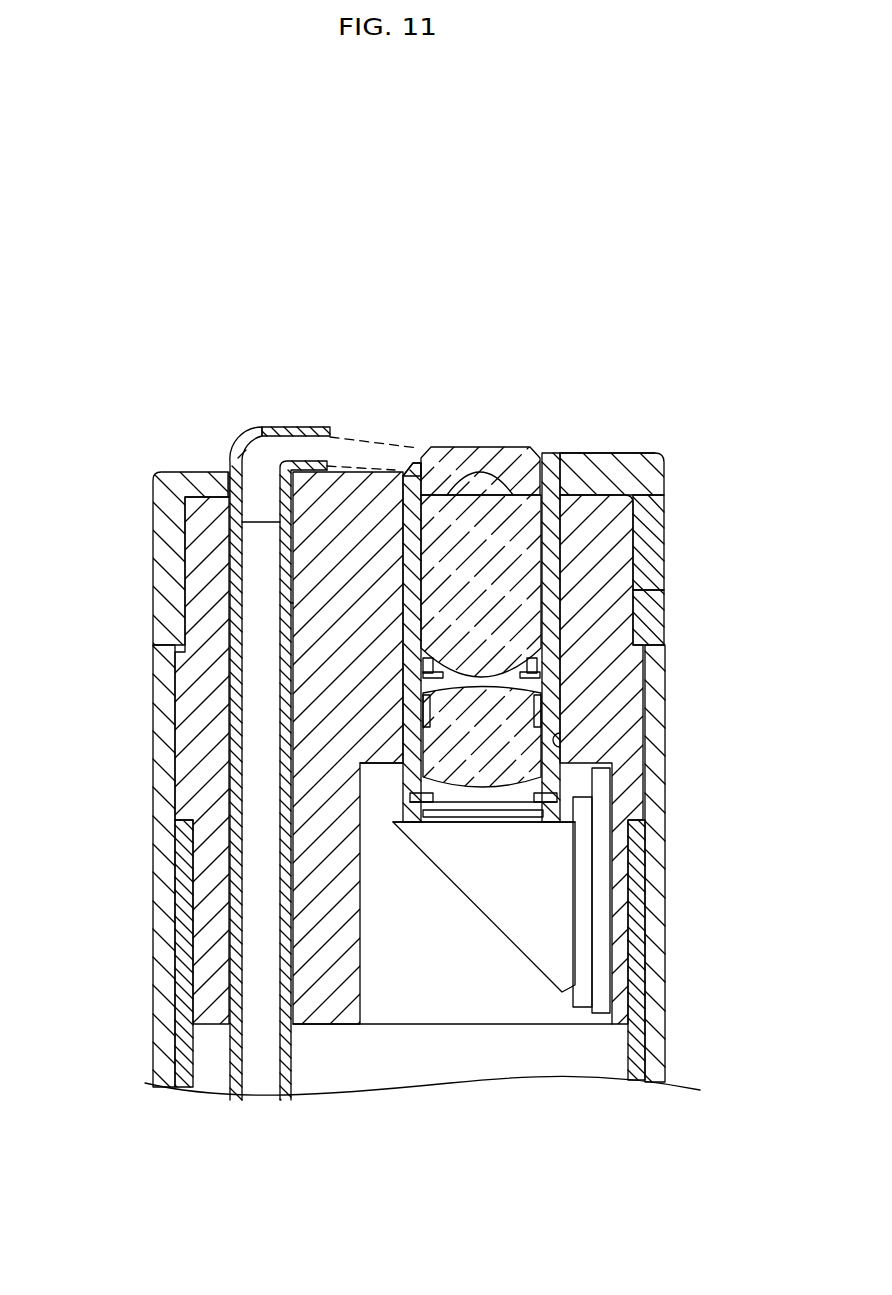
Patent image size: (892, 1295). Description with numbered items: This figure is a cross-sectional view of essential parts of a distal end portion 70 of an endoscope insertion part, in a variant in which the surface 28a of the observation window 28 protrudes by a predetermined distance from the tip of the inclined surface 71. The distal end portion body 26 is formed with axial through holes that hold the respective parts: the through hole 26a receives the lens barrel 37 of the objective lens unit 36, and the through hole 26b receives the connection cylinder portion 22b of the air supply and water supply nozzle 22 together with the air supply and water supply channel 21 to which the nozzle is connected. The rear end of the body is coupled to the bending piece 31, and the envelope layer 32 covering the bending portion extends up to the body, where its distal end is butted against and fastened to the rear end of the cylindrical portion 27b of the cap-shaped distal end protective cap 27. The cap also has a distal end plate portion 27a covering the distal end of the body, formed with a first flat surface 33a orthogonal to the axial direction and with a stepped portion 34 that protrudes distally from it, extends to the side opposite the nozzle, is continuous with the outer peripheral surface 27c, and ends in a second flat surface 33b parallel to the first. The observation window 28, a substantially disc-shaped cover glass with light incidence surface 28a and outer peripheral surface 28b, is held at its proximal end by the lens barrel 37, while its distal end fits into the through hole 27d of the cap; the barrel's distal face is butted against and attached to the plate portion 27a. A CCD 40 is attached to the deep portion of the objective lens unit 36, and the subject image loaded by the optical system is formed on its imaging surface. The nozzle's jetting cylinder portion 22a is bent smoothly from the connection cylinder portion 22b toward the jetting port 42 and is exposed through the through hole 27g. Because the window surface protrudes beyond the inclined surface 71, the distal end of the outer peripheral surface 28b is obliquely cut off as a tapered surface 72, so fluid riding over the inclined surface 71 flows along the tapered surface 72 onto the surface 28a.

The distal end portion 70 is at (280, 224).
The air supply and water supply channel 21 is at (258, 1068).
The air supply and water supply nozzle 22 is at (300, 312).
The jetting cylinder portion 22a is at (305, 450).
The connection cylinder portion 22b is at (252, 476).
The distal end portion body 26 is at (603, 731).
The through hole 26a is at (561, 740).
The through hole 26b is at (215, 582).
The distal end protective cap 27 is at (723, 450).
The distal end plate portion 27a is at (592, 487).
The cylindrical portion 27b is at (652, 562).
The outer peripheral surface 27c is at (664, 538).
The through hole 27d is at (541, 462).
The through hole 27g is at (227, 476).
The observation window 28 is at (488, 451).
The surface 28a is at (472, 445).
The outer peripheral surface 28b is at (549, 462).
The bending piece 31 is at (640, 1058).
The envelope layer 32 is at (650, 840).
The first flat surface 33a is at (190, 472).
The second flat surface 33b is at (620, 451).
The stepped portion 34 is at (574, 455).
The objective lens unit 36 is at (490, 741).
The lens barrel 37 is at (560, 667).
The CCD 40 is at (605, 950).
The jetting port 42 is at (313, 465).
The inclined surface 71 is at (405, 461).
The tapered surface 72 is at (413, 458).